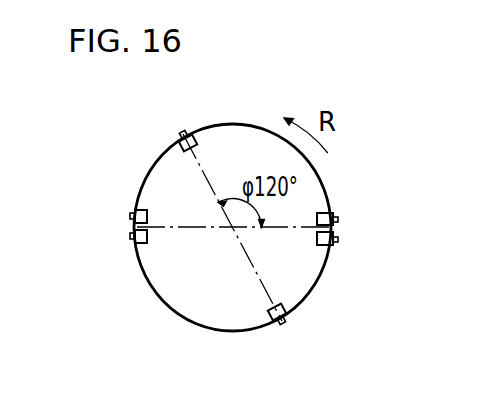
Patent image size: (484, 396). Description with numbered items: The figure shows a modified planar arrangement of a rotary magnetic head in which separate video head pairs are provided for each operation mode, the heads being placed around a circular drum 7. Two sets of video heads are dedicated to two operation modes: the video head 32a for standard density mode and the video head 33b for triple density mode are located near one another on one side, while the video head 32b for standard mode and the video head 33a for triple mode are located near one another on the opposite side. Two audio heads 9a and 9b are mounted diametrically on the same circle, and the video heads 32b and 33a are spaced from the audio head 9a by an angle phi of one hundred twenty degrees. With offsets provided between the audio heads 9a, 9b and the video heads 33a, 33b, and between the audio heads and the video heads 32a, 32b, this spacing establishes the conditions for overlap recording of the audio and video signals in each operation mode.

The rotary head drum 7 is at (151, 167).
The audio head 9a is at (181, 132).
The audio head 9b is at (285, 323).
The video head for standard density mode 32a is at (130, 237).
The video head for standard density mode 32b is at (340, 218).
The video head for triple density mode 33a is at (338, 240).
The video head for triple density mode 33b is at (130, 216).